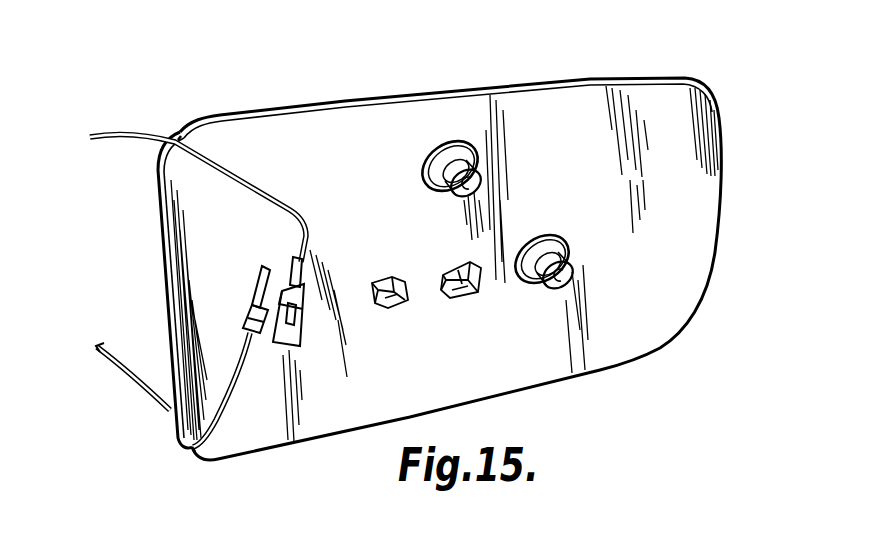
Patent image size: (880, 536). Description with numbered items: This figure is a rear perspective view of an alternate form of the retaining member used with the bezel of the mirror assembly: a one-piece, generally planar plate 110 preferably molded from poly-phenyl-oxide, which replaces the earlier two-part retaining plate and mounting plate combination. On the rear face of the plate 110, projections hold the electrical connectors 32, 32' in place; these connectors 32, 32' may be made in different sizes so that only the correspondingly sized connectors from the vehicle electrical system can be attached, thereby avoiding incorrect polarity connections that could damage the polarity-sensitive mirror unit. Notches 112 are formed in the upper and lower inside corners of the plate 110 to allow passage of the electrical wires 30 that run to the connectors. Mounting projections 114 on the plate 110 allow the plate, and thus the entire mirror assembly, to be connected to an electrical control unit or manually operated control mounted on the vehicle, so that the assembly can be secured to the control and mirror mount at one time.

The retaining member of plate 110 is at (598, 103).
The notches 112 is at (178, 140).
The mounting projections 114 is at (534, 232).
The electrical wires 30 is at (233, 176).
The electrical connector 32 is at (233, 290).
The electrical connector 32' is at (313, 329).